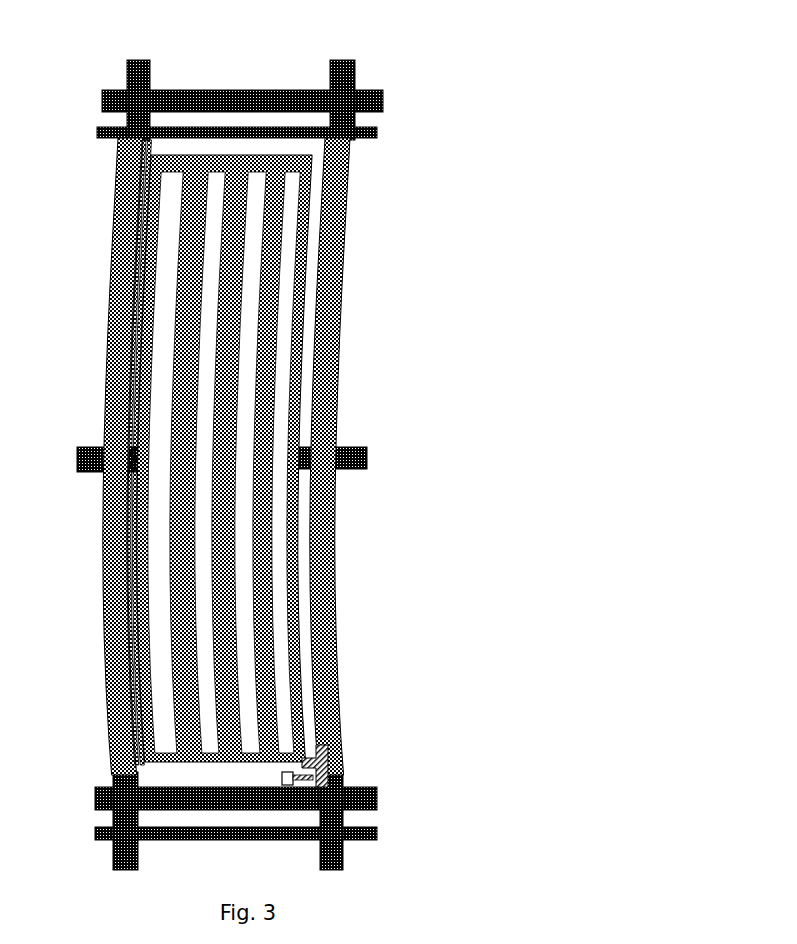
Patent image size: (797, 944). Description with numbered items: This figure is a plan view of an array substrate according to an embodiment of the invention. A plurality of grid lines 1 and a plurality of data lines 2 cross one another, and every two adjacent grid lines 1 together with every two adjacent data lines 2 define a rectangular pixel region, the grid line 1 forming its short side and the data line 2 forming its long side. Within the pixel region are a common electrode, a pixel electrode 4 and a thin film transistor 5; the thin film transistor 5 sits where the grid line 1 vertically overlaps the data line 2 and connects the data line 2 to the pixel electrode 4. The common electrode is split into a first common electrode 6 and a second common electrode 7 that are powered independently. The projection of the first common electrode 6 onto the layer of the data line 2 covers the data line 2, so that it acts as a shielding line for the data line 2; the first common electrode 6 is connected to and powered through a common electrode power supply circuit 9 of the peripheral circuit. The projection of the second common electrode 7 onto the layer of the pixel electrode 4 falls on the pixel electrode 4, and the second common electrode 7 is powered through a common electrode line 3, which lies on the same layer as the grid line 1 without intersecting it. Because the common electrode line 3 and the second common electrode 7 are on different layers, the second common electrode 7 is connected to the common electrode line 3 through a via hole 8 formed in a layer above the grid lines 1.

The grid line 1 is at (432, 43).
The data line 2 is at (200, 31).
The common electrode line 3 is at (424, 393).
The pixel electrode 4 is at (77, 149).
The thin film transistor 5 is at (369, 713).
The first common electrode 6 is at (79, 218).
The second common electrode 7 is at (79, 281).
The via hole 8 is at (79, 416).
The common electrode power supply circuit 9 is at (77, 91).